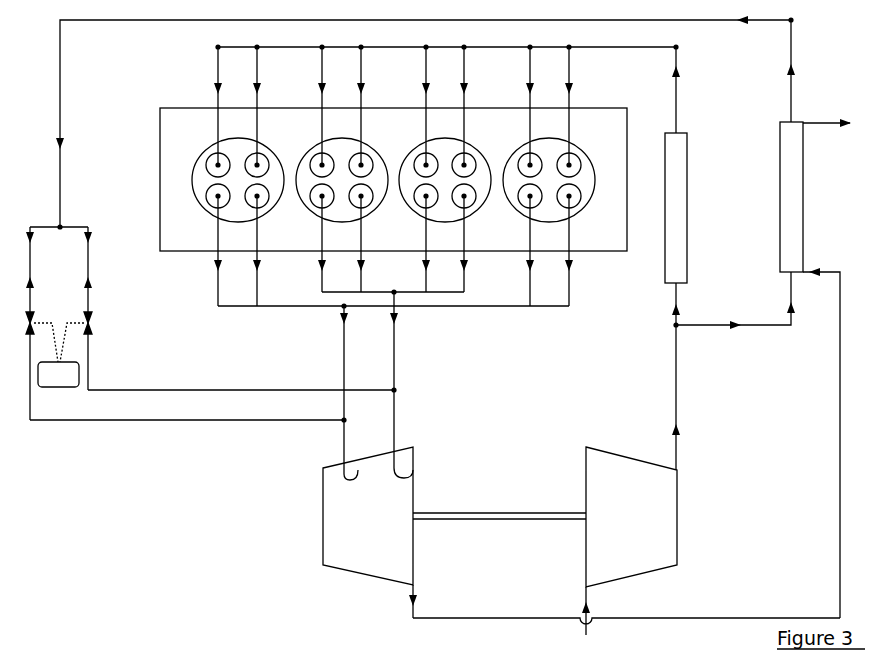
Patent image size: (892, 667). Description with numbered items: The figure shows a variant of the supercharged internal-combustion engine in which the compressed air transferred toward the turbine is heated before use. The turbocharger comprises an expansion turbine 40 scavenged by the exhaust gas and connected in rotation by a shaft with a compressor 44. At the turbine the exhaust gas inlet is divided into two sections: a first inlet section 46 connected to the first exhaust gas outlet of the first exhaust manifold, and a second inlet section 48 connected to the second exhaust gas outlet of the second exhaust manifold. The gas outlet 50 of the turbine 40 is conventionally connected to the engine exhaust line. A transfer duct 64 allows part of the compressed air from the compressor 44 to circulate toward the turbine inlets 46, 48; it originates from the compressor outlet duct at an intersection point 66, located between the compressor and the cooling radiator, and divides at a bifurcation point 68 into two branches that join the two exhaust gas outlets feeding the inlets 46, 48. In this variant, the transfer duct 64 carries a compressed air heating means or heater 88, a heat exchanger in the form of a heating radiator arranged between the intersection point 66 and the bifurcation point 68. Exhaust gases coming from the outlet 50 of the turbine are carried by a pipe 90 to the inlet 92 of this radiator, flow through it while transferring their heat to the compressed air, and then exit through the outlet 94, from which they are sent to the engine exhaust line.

The expansion turbine 40 is at (323, 530).
The compressor 44 is at (677, 553).
The first inlet section 46 is at (338, 478).
The second inlet section 48 is at (420, 471).
The gas outlet 50 is at (413, 578).
The transfer duct 64 is at (778, 325).
The intersection point 66 is at (676, 325).
The bifurcation point 68 is at (60, 227).
The heater 88 is at (778, 192).
The pipe 90 is at (550, 615).
The inlet 92 is at (808, 270).
The outlet 94 is at (812, 127).